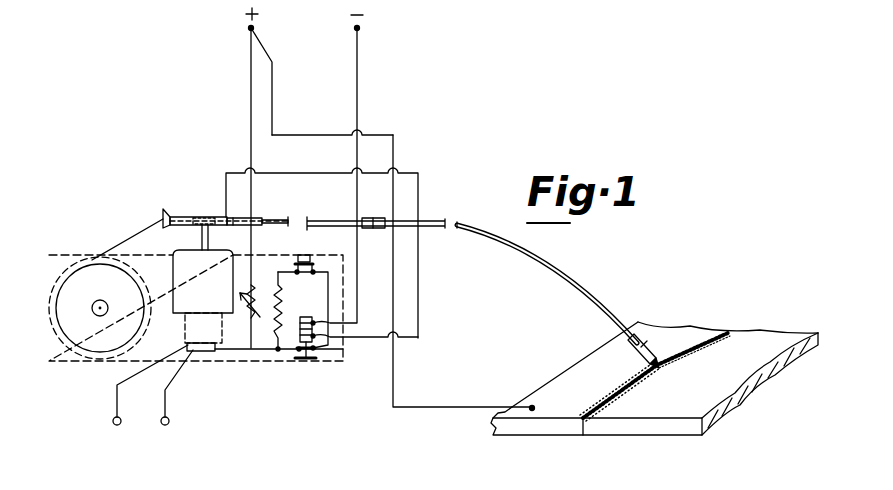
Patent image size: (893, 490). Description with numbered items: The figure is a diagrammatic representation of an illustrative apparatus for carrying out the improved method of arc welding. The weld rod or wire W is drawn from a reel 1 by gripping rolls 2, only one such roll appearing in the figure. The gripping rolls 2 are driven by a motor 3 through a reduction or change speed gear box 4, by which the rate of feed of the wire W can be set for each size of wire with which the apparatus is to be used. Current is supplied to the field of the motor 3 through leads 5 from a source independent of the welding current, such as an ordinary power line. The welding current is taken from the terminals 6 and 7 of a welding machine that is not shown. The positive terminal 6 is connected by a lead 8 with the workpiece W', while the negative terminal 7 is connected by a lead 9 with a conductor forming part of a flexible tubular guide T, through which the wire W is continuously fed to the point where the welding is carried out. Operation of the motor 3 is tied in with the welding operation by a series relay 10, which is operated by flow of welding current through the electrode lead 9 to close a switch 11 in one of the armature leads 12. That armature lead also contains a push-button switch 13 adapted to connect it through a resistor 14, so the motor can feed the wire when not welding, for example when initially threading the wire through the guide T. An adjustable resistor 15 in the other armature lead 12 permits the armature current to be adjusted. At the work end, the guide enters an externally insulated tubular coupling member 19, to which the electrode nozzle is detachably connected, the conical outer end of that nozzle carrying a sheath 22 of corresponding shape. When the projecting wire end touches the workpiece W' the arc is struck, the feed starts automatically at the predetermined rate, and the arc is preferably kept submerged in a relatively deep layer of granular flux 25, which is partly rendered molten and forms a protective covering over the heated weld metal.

The reel 1 is at (73, 348).
The gripping rolls 2 is at (200, 217).
The motor 3 is at (184, 331).
The reduction or change speed gear box 4 is at (173, 273).
The leads 5 is at (166, 399).
The positive terminal 6 is at (248, 28).
The negative terminal 7 is at (360, 29).
The lead 8 is at (250, 63).
The lead 9 is at (358, 66).
The series relay 10 is at (314, 304).
The switch 11 is at (307, 360).
The armature leads 12 is at (232, 350).
The push-button switch 13 is at (300, 255).
The resistor 14 is at (282, 296).
The adjustable resistor 15 is at (248, 289).
The tubular coupling member 19 is at (648, 350).
The sheath 22 is at (660, 362).
The granular flux 25 is at (623, 398).
The flexible tubular guide T is at (466, 226).
The weld rod or wire W is at (266, 229).
The workpiece W' is at (654, 378).